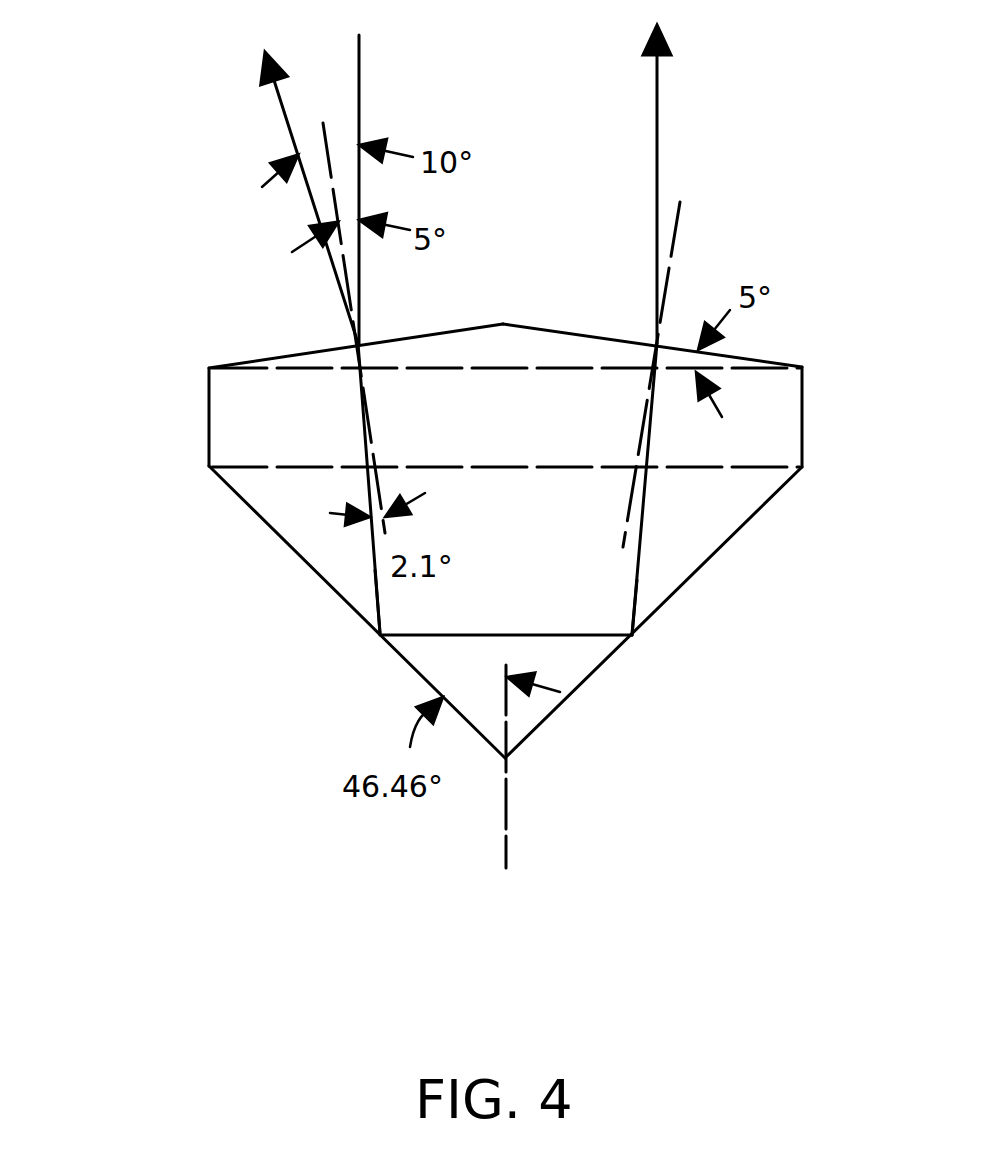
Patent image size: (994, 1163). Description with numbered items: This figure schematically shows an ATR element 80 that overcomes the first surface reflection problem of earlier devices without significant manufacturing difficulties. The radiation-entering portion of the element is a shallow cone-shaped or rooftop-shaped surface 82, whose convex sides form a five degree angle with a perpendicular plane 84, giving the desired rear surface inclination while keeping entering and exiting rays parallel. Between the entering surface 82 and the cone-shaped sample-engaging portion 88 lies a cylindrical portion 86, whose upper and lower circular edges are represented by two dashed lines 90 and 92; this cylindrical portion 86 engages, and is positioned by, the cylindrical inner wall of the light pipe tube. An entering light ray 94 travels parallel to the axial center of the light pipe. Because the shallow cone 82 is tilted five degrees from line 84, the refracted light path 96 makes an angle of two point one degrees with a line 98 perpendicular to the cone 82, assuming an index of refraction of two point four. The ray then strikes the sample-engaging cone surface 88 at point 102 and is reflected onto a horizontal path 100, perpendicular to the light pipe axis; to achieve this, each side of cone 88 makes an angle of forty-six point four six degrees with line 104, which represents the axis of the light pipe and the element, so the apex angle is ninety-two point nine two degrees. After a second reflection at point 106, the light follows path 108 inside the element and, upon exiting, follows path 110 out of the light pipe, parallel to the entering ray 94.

The ATR element 80 is at (692, 518).
The shallow cone-shaped surface 82 is at (468, 327).
The perpendicular plane 84 is at (590, 348).
The cylindrical portion 86 is at (802, 427).
The cone-shaped sample-engaging portion 88 is at (342, 600).
The dashed line 90 is at (209, 368).
The dashed line 92 is at (209, 466).
The entering light ray 94 is at (360, 60).
The light path after refraction 96 is at (373, 543).
The line perpendicular to cone 98 is at (327, 145).
The horizontal path 100 is at (578, 640).
The reflection point 102 is at (382, 635).
The axis line 104 is at (507, 803).
The reflection point 106 is at (632, 635).
The inside light path 108 is at (640, 545).
The exiting path 110 is at (657, 145).